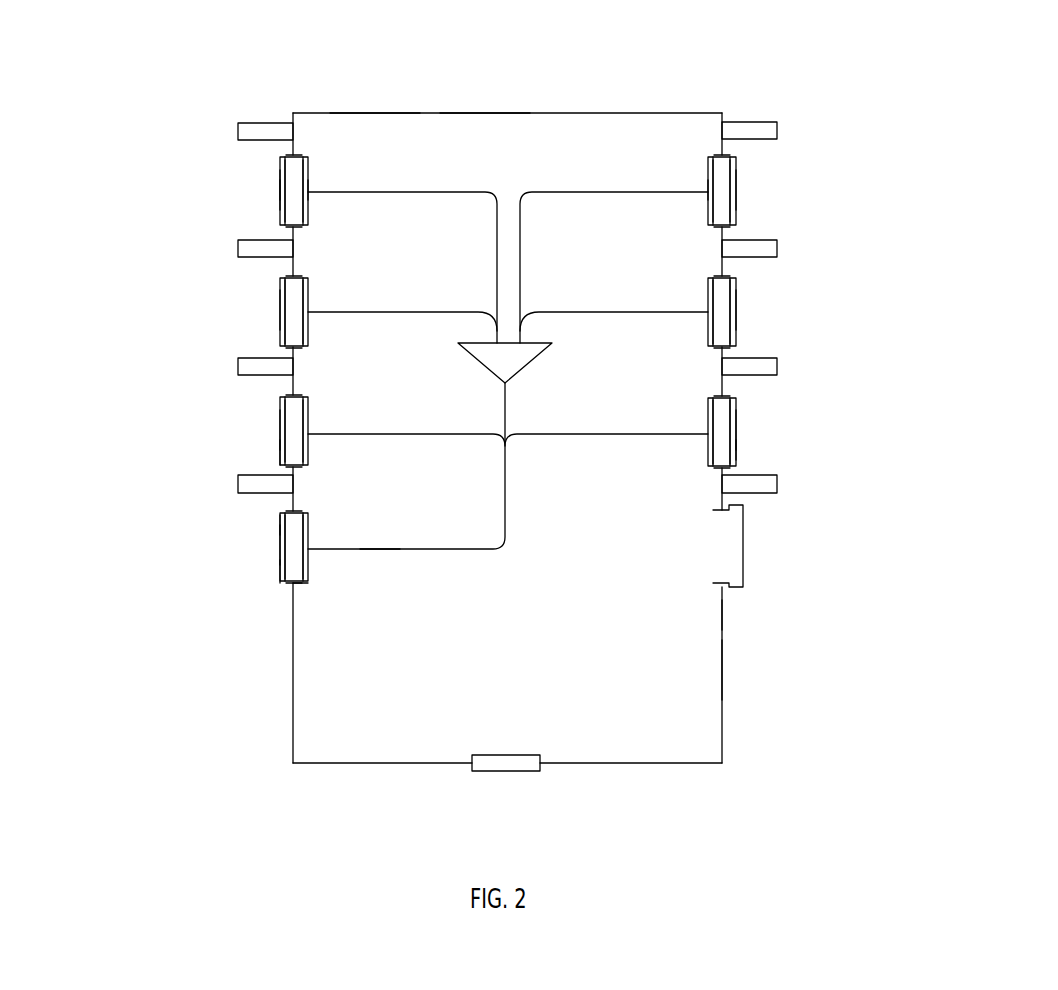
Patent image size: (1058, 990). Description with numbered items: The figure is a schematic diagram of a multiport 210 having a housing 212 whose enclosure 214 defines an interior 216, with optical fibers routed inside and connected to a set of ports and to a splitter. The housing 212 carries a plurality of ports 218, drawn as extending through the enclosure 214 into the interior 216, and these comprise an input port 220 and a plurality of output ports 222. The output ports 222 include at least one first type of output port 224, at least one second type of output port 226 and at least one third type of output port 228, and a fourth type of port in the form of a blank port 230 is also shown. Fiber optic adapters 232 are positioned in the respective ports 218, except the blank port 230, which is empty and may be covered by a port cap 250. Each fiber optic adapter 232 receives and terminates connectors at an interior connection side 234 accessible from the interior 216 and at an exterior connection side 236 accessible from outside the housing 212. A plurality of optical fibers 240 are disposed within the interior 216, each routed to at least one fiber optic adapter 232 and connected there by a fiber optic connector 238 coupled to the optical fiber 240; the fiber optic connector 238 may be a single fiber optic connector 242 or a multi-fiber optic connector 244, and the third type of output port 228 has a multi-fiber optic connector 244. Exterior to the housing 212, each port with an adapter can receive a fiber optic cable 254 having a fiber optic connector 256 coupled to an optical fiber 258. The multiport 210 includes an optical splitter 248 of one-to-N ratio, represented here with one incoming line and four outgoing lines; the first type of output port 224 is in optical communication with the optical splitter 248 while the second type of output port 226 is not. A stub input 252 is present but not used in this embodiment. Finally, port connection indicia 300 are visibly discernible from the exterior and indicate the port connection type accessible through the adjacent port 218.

The multiport 210 is at (347, 62).
The housing 212 is at (316, 112).
The enclosure 214 is at (368, 112).
The interior 216 is at (488, 128).
The plurality of ports 218 is at (157, 610).
The input port 220 is at (285, 588).
The plurality of output ports 222 is at (143, 333).
The first type of output port 224 is at (218, 352).
The second type of output port 226 is at (762, 450).
The third type of output port 228 is at (268, 460).
The blank port 230 is at (723, 588).
The fiber optic adapter 232 is at (290, 225).
The interior connection side 234 is at (310, 184).
The exterior connection side 236 is at (272, 190).
The fiber optic connector 238 is at (305, 585).
The optical fibers 240 is at (383, 549).
The single fiber optic connector 242 is at (708, 190).
The multi-fiber optic connector 244 is at (280, 525).
The optical splitter 248 is at (537, 355).
The port cap 250 is at (768, 500).
The stub input 252 is at (480, 776).
The fiber optic cable 254 is at (246, 199).
The fiber optic connector 256 is at (280, 205).
The optical fiber 258 is at (192, 482).
The port connection indicia 300 is at (253, 122).